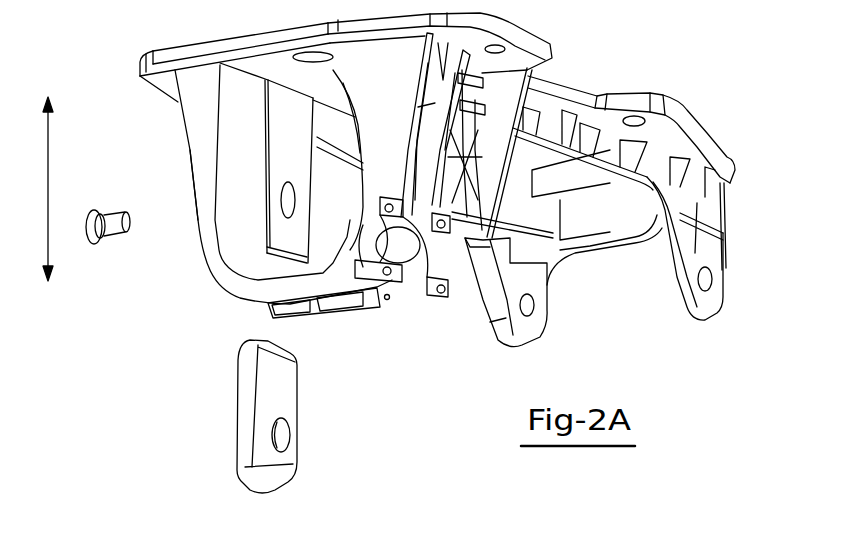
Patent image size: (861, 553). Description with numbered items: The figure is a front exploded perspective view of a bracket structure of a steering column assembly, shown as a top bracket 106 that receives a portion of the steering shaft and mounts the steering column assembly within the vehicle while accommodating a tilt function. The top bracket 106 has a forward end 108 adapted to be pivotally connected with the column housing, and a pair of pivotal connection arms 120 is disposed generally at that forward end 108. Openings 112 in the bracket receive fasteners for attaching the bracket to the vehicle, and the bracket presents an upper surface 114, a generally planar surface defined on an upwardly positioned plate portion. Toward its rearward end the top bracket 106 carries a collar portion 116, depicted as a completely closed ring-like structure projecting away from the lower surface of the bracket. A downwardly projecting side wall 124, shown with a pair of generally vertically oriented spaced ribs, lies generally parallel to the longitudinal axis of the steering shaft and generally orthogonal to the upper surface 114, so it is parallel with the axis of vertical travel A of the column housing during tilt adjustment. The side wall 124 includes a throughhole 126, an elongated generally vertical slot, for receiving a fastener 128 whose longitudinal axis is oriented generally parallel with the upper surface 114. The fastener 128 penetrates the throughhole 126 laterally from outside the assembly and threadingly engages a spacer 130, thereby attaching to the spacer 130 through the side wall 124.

The axis of vertical travel A is at (39, 189).
The top bracket 106 is at (462, 294).
The forward end 108 is at (730, 240).
The openings 112 is at (637, 118).
The upper surface 114 is at (682, 106).
The collar portion 116 is at (211, 282).
The pivotal connection arms 120 is at (545, 325).
The side wall 124 is at (291, 150).
The throughhole 126 is at (283, 206).
The fastener 128 is at (113, 242).
The spacer 130 is at (285, 470).